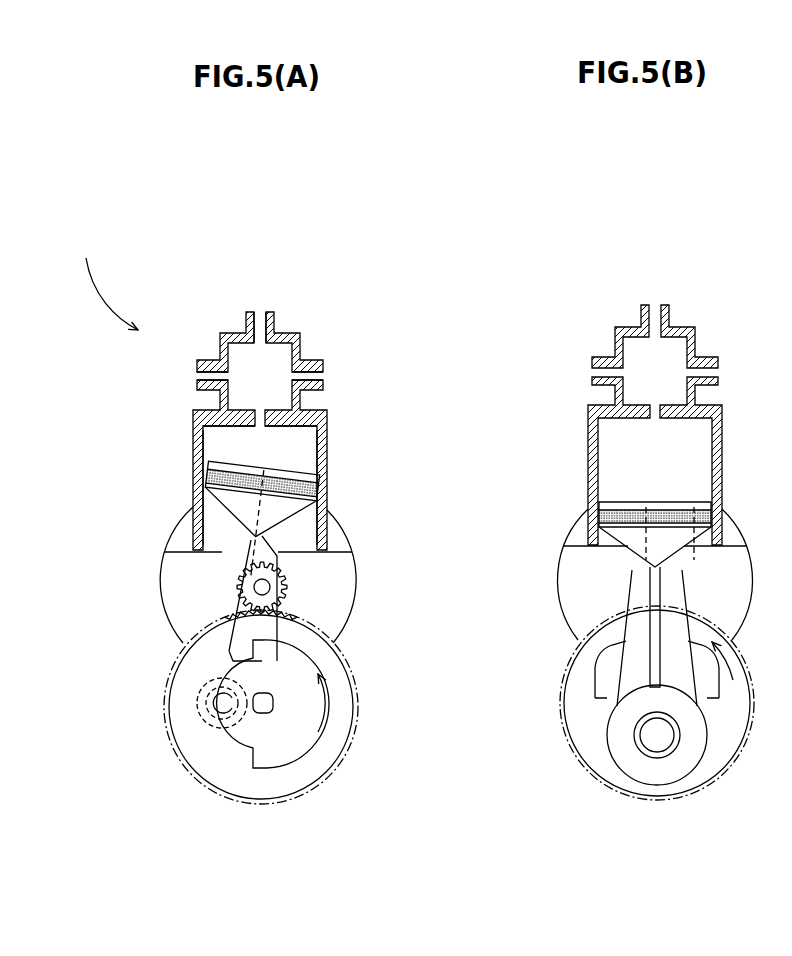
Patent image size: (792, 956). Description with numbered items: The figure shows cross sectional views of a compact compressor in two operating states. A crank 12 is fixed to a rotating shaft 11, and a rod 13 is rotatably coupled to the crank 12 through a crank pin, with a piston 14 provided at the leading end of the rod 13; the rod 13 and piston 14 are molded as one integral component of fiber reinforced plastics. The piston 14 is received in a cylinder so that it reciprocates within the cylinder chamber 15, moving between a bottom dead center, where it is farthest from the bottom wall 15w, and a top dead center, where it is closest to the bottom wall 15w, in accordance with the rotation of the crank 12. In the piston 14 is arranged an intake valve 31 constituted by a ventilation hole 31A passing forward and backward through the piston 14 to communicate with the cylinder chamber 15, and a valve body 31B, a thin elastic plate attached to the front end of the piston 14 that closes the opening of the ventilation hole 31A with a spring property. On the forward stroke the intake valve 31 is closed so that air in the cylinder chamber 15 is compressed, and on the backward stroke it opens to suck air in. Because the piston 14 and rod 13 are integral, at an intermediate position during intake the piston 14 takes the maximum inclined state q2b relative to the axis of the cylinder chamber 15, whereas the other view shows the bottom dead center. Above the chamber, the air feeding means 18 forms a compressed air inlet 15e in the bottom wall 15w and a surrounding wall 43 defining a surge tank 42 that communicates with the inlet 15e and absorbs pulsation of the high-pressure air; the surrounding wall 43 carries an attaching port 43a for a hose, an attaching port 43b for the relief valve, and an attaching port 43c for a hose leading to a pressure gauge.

In FIG. 5A, the air feeding means 18 is at (259, 310).
In FIG. 5A, the surrounding wall 43 is at (259, 310).
In FIG. 5B, the surrounding wall 43 is at (677, 318).
In FIG. 5A, the attaching port 43a is at (323, 379).
In FIG. 5A, the attaching port 43b is at (197, 377).
In FIG. 5A, the attaching port 43c is at (259, 312).
In FIG. 5A, the surge tank 42 is at (252, 357).
In FIG. 5A, the maximum inclined state q2b is at (102, 280).
In FIG. 5A, the cylinder chamber 15 is at (295, 457).
In FIG. 5A, the compressed air inlet 15e is at (255, 430).
In FIG. 5A, the bottom wall 15w is at (305, 436).
In FIG. 5A, the piston 14 is at (193, 537).
In FIG. 5A, the rod 13 is at (165, 609).
In FIG. 5A, the crank 12 is at (284, 766).
In FIG. 5A, the rotating shaft 11 is at (266, 712).
In FIG. 5A, the intake valve 31 is at (343, 561).
In FIG. 5A, the ventilation hole 31A is at (296, 512).
In FIG. 5A, the valve body 31B is at (303, 462).